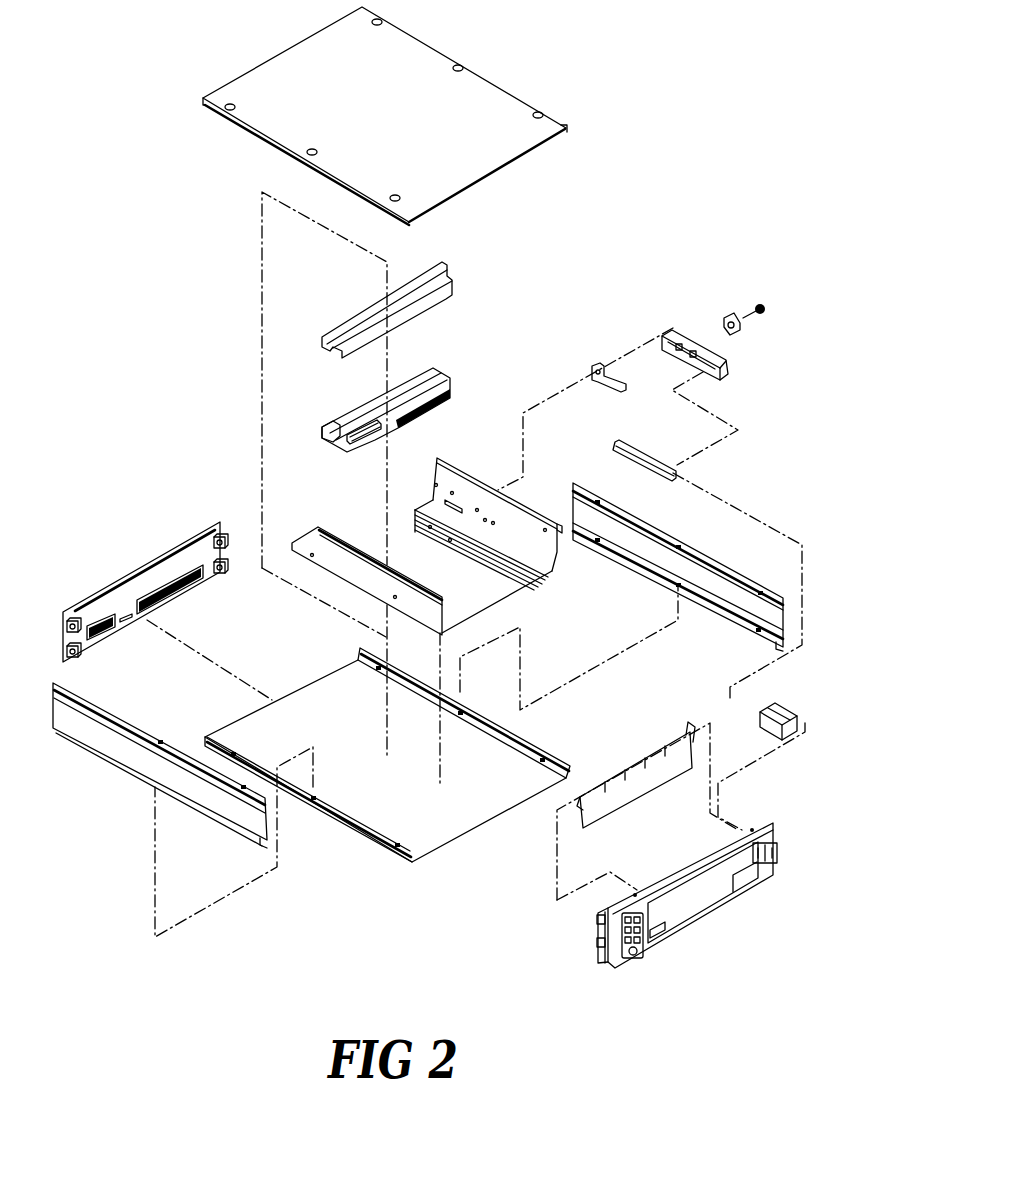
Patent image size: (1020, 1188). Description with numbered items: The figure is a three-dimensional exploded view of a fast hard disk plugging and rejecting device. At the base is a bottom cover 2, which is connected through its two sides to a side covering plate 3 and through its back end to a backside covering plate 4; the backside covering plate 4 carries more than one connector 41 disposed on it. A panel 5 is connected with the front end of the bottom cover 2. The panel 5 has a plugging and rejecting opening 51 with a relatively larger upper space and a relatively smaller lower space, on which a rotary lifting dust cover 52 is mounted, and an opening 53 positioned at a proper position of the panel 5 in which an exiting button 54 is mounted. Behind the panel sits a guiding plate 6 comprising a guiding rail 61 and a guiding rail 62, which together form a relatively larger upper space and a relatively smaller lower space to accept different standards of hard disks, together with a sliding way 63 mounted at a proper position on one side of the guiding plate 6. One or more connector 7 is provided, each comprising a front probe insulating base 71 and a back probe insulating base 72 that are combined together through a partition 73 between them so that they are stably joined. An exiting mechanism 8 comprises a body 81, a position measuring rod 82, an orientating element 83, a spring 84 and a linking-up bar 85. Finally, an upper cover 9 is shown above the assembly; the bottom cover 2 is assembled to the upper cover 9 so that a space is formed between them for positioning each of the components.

The bottom cover 2 is at (440, 845).
The side covering plate 3 is at (123, 767).
The backside covering plate 4 is at (152, 579).
The connector 41 is at (180, 598).
The panel 5 is at (698, 930).
The plugging and rejecting opening 51 is at (697, 895).
The rotary lifting dust cover 52 is at (647, 757).
The opening 53 is at (775, 860).
The exiting button 54 is at (758, 716).
The guiding plate 6 is at (449, 548).
The guiding rail 61 is at (527, 563).
The guiding rail 62 is at (493, 595).
The sliding way 63 is at (467, 503).
The connector 7 is at (380, 413).
The front probe insulating base 71 is at (338, 453).
The back probe insulating base 72 is at (321, 431).
The partition 73 is at (324, 338).
The exiting mechanism 8 is at (660, 358).
The body 81 is at (685, 337).
The position measuring rod 82 is at (612, 368).
The orientating element 83 is at (731, 320).
The spring 84 is at (763, 314).
The linking-up bar 85 is at (652, 463).
The upper cover 9 is at (442, 52).